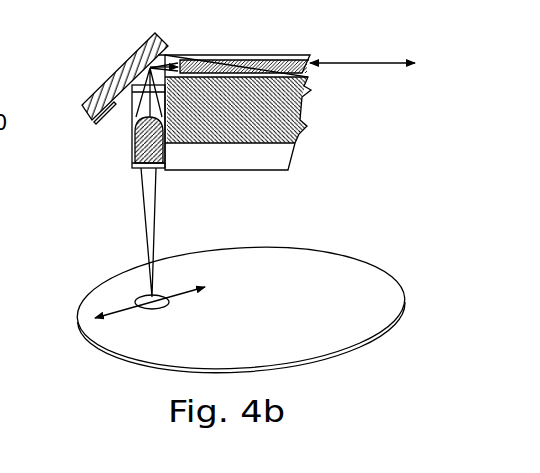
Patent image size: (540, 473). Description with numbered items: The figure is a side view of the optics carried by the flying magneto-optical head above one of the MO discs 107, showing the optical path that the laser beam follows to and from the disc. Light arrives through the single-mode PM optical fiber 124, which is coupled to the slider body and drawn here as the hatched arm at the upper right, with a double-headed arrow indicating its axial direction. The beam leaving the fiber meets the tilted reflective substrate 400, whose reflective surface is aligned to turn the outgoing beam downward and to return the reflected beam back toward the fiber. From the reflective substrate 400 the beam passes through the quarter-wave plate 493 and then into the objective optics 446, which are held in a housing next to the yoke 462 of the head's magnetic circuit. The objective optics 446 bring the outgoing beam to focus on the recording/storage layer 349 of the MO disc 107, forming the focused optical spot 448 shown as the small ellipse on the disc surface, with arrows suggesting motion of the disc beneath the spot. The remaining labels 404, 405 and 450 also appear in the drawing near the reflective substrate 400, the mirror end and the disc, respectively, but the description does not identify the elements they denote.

The single-mode PM optical fiber 124 is at (273, 55).
The quarter-wave plate 493 is at (122, 70).
The reflective substrate 400 is at (104, 86).
The lens holder housing 404 is at (131, 151).
The mirror reflective layer 405 is at (88, 127).
The objective optics 446 is at (133, 163).
The yoke 462 is at (137, 173).
The MO disc 107 is at (97, 279).
The recording/storage layer 349 is at (275, 278).
The focused optical spot 448 is at (165, 299).
The track direction 450 is at (132, 308).